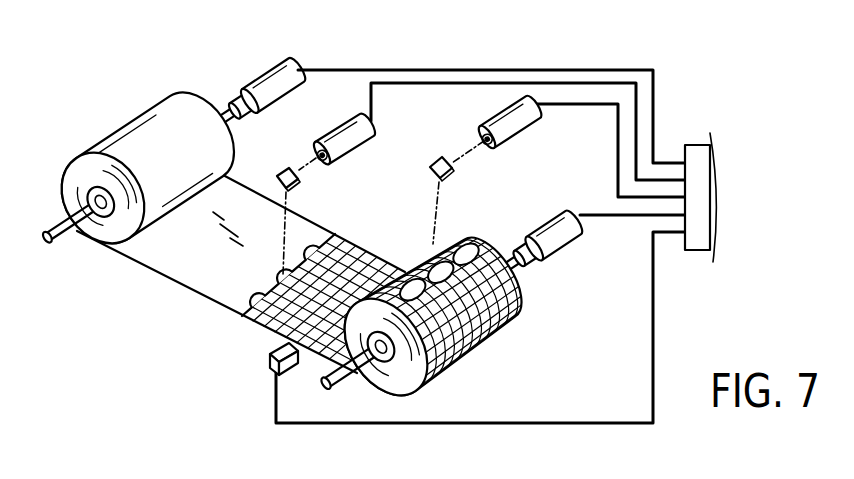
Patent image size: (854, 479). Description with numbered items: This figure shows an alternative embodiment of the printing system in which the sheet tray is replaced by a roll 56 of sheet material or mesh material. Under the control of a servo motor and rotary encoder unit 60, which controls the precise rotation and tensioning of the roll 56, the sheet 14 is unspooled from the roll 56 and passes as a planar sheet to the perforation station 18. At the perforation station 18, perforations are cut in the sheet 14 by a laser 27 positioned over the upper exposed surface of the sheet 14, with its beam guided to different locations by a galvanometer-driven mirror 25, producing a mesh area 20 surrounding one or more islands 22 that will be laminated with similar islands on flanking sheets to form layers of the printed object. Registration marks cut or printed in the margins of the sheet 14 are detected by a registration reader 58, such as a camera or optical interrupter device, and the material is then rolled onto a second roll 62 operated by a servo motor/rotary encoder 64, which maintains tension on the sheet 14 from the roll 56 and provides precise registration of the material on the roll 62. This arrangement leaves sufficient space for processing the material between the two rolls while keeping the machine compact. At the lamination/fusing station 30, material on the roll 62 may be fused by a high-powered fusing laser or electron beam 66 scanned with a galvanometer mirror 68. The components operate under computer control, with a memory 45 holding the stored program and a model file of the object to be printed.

The sheet 14 is at (190, 283).
The perforation station 18 is at (264, 184).
The mesh area 20 is at (262, 323).
The island 22 is at (329, 251).
The galvanometer-driven mirror 25 is at (294, 184).
The laser 27 is at (333, 132).
The lamination/fusing station 30 is at (557, 167).
The memory 45 is at (702, 211).
The roll 56 is at (164, 138).
The registration reader 58 is at (270, 362).
The servo motor and rotary encoder unit 60 is at (263, 83).
The second roll 62 is at (510, 302).
The servo motor/rotary encoder 64 is at (555, 237).
The fusing laser or electron beam 66 is at (497, 118).
The galvanometer mirror 68 is at (449, 174).